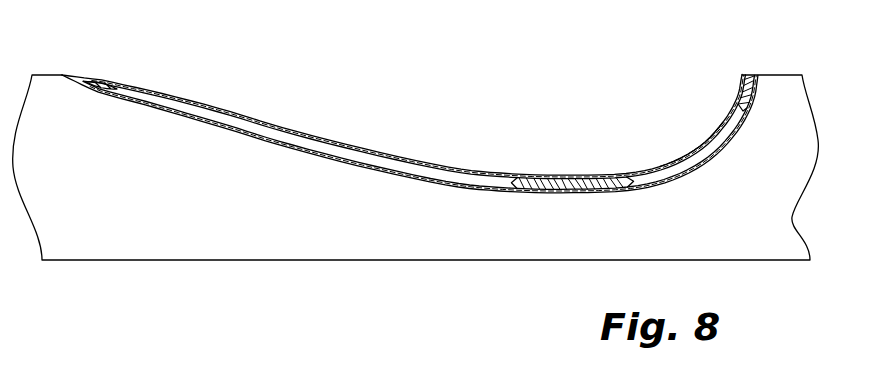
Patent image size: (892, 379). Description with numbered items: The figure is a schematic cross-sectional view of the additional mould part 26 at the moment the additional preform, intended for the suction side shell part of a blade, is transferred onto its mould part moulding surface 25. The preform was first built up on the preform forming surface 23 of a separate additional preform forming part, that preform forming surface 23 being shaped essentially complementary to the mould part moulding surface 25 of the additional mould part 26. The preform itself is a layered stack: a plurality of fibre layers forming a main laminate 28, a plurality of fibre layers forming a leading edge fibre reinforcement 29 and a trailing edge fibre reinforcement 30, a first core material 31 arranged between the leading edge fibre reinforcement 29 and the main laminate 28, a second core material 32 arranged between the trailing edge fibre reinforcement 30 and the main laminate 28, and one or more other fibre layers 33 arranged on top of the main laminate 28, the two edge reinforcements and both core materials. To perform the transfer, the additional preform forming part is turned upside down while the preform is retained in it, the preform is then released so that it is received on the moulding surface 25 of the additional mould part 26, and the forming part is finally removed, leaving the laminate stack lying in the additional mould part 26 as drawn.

The preform forming surface 23 is at (330, 140).
The mould part moulding surface 25 is at (410, 128).
The additional mould part 26 is at (733, 249).
The main laminate 28 is at (543, 191).
The leading edge fibre reinforcement 29 is at (742, 77).
The trailing edge fibre reinforcement 30 is at (85, 73).
The first core material 31 is at (678, 162).
The second core material 32 is at (428, 170).
The other fibre layers 33 is at (360, 163).